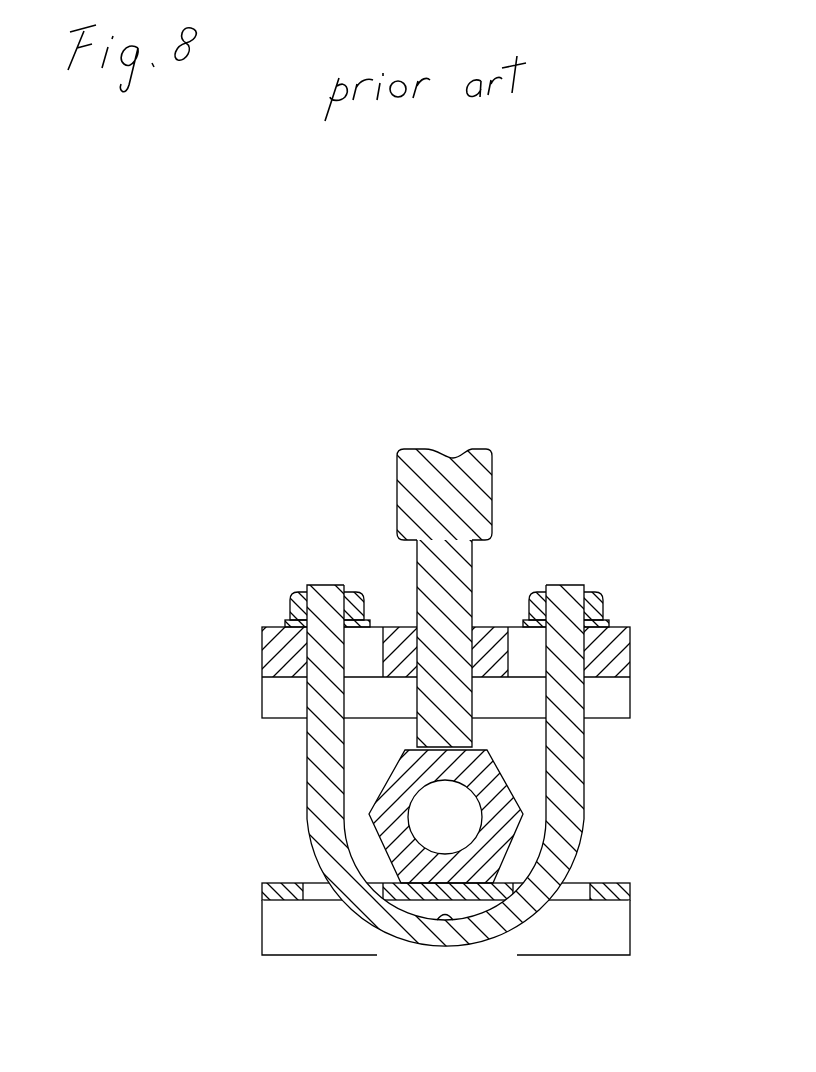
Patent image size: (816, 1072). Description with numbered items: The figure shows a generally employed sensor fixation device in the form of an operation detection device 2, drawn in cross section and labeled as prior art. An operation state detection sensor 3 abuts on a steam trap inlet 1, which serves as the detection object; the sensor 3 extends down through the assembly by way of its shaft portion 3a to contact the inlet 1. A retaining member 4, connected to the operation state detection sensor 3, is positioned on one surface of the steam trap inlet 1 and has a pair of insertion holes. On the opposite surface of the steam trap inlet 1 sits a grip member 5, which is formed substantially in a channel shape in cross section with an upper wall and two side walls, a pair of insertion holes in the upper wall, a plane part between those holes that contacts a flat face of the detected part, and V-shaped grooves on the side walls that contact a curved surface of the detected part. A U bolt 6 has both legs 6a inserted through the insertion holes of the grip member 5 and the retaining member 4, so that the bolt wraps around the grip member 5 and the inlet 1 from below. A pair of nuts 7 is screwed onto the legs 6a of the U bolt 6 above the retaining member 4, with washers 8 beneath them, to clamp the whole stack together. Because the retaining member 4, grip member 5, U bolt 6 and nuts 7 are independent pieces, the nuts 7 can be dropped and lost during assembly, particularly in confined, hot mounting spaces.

The steam trap inlet 1 is at (370, 816).
The operation detection device 2 is at (581, 545).
The operation state detection sensor 3 is at (334, 598).
The shaft portion 3a is at (417, 578).
The retaining member 4 is at (262, 652).
The grip member 5 is at (262, 893).
The U bolt 6 is at (452, 817).
The legs 6a is at (307, 745).
The nuts 7 is at (291, 600).
The washer 8 is at (285, 624).